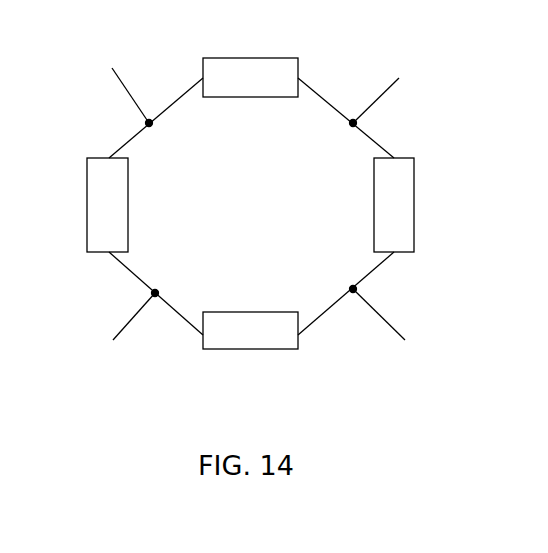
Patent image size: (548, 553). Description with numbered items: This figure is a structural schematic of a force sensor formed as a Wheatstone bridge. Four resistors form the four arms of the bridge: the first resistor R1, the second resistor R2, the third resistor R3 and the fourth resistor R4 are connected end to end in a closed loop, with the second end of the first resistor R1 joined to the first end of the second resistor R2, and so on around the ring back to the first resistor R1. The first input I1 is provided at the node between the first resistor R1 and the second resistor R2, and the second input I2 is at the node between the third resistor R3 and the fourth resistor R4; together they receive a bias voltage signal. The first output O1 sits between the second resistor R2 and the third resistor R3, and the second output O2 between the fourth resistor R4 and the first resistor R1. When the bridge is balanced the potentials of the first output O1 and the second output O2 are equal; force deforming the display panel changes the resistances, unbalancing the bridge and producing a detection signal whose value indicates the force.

The first resistor R1 is at (84, 205).
The second resistor R2 is at (250, 57).
The third resistor R3 is at (411, 205).
The fourth resistor R4 is at (250, 351).
The first input I1 is at (121, 86).
The second input I2 is at (388, 321).
The first output O1 is at (391, 92).
The second output O2 is at (128, 329).